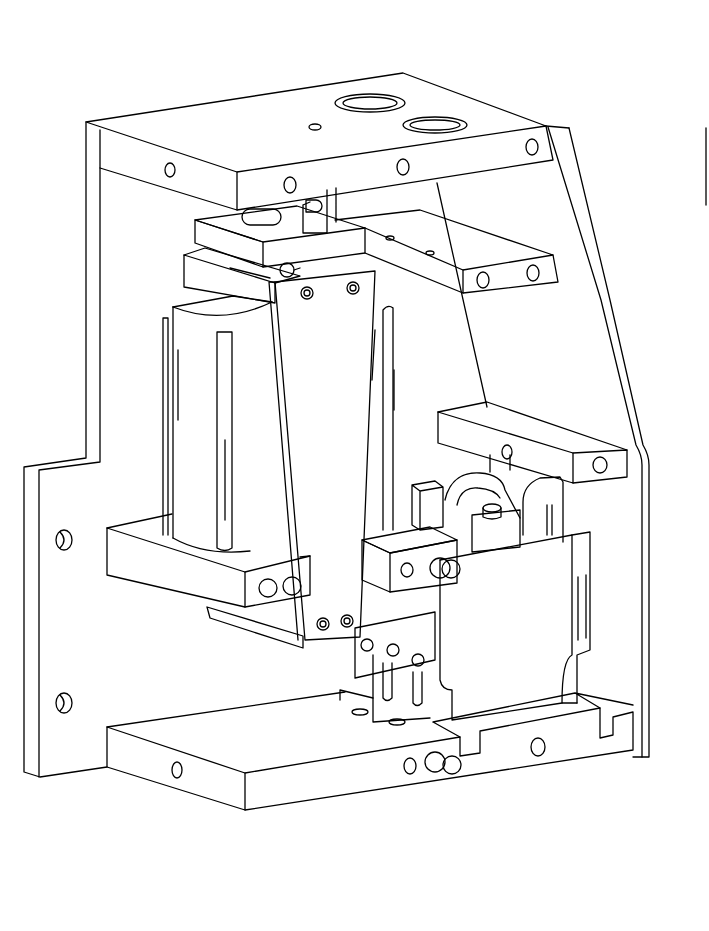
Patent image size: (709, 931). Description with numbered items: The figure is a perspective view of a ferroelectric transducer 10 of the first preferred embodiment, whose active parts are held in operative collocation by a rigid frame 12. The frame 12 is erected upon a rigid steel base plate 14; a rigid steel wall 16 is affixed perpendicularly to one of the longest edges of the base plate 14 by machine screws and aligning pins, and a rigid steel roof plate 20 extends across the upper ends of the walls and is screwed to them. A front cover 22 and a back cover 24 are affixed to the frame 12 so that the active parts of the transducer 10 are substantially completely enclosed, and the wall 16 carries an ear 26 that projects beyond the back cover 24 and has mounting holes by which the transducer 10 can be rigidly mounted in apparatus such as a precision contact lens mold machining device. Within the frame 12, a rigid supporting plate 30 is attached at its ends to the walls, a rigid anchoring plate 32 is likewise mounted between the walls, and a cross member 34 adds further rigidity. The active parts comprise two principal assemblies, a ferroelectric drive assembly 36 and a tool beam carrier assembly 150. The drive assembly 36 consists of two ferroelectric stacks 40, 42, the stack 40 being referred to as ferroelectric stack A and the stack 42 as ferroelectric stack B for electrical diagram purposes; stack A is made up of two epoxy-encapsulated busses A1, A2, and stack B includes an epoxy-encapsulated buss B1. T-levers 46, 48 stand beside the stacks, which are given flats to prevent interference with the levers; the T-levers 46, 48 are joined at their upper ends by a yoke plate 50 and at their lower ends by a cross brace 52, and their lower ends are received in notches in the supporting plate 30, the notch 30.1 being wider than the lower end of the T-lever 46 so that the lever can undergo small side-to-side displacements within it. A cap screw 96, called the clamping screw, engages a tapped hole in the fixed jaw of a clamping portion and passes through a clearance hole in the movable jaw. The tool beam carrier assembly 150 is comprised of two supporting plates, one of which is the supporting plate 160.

The ferroelectric transducer 10 is at (135, 848).
The rigid frame 12 is at (222, 123).
The rigid steel base plate 14 is at (155, 787).
The rigid steel wall 16 is at (118, 289).
The rigid steel roof plate 20 is at (447, 103).
The front cover 22 is at (577, 258).
The back cover 24 is at (707, 183).
The ear 26 is at (50, 483).
The rigid supporting plate 30 is at (172, 585).
The notch 30.1 is at (373, 567).
The rigid anchoring plate 32 is at (470, 236).
The cross member 34 is at (503, 420).
The ferroelectric drive assembly 36 is at (160, 482).
The ferroelectric stack 40 is at (185, 445).
The ferroelectric stack 42 is at (383, 366).
The T-lever 46 is at (333, 412).
The T-lever 48 is at (205, 291).
The yoke plate 50 is at (208, 240).
The cross brace 52 is at (265, 623).
The cap screw 96 is at (245, 218).
The tool beam carrier assembly 150 is at (586, 551).
The supporting plate 160 is at (530, 660).
The ferroelectric stack A is at (185, 381).
The epoxy-encapsulated buss A1 is at (165, 346).
The epoxy-encapsulated buss A2 is at (237, 476).
The ferroelectric stack B is at (380, 350).
The epoxy-encapsulated buss B1 is at (393, 388).